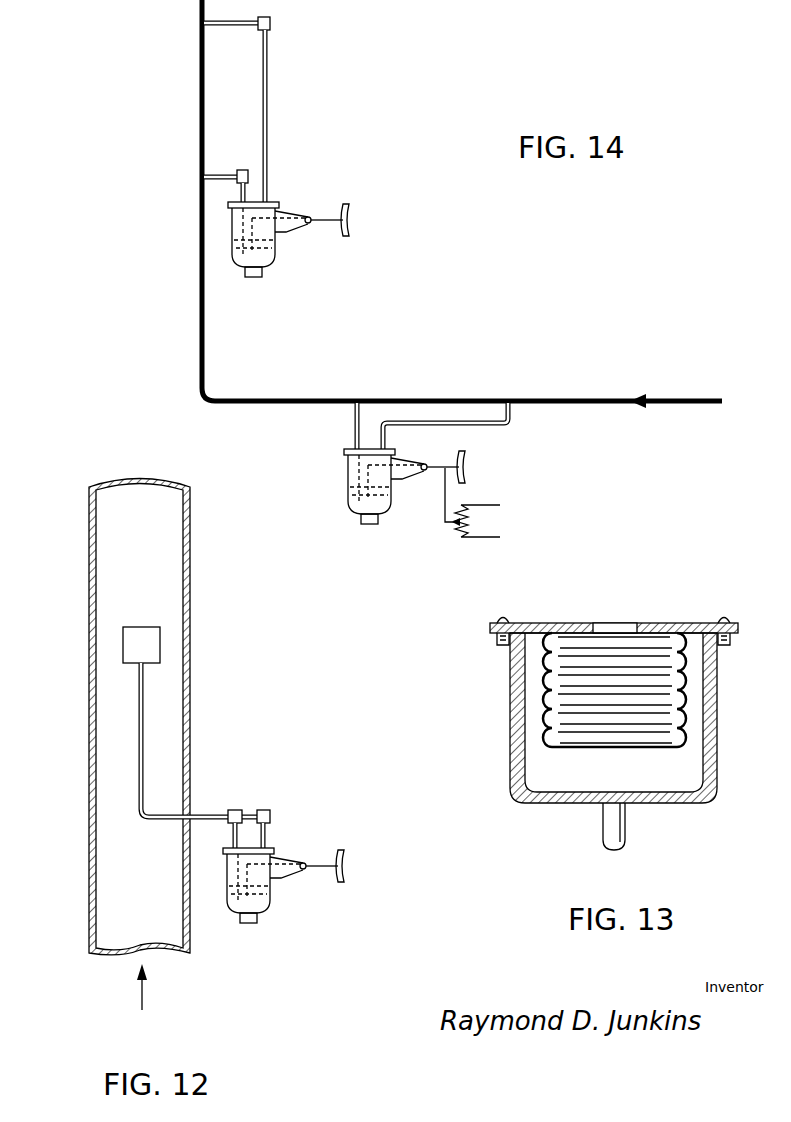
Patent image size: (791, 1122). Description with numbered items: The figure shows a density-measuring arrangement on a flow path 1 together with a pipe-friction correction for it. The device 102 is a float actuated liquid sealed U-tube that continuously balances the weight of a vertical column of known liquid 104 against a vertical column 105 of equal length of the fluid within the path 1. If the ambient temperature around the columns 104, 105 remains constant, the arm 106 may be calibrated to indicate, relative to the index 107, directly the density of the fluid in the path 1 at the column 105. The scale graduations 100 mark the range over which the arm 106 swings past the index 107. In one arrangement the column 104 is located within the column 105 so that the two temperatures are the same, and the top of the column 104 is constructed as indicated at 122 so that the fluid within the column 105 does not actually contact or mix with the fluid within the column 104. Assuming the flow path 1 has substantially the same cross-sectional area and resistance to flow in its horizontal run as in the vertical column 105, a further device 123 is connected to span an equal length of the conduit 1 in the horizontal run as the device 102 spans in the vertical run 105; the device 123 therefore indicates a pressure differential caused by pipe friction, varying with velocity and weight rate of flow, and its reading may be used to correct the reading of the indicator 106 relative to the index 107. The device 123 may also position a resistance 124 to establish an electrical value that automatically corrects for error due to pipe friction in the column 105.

In FIG. 14, the flow path 1 is at (590, 399).
In FIG. 14, the scale (0-100) 100 is at (354, 222).
In FIG. 12, the scale (0-100) 100 is at (350, 868).
In FIG. 14, the device 102 is at (276, 248).
In FIG. 12, the device 102 is at (272, 895).
In FIG. 14, the vertical column of known liquid 104 is at (268, 122).
In FIG. 12, the vertical column of known liquid 104 is at (145, 755).
In FIG. 14, the vertical column 105 is at (200, 122).
In FIG. 12, the vertical column 105 is at (191, 700).
In FIG. 14, the arm 106 is at (310, 217).
In FIG. 14, the index 107 is at (357, 222).
In FIG. 12, the top of the column 122 is at (161, 645).
In FIG. 13, the top of the column 122 is at (510, 722).
In FIG. 14, the device 123 is at (385, 508).
In FIG. 14, the resistance 124 is at (492, 503).